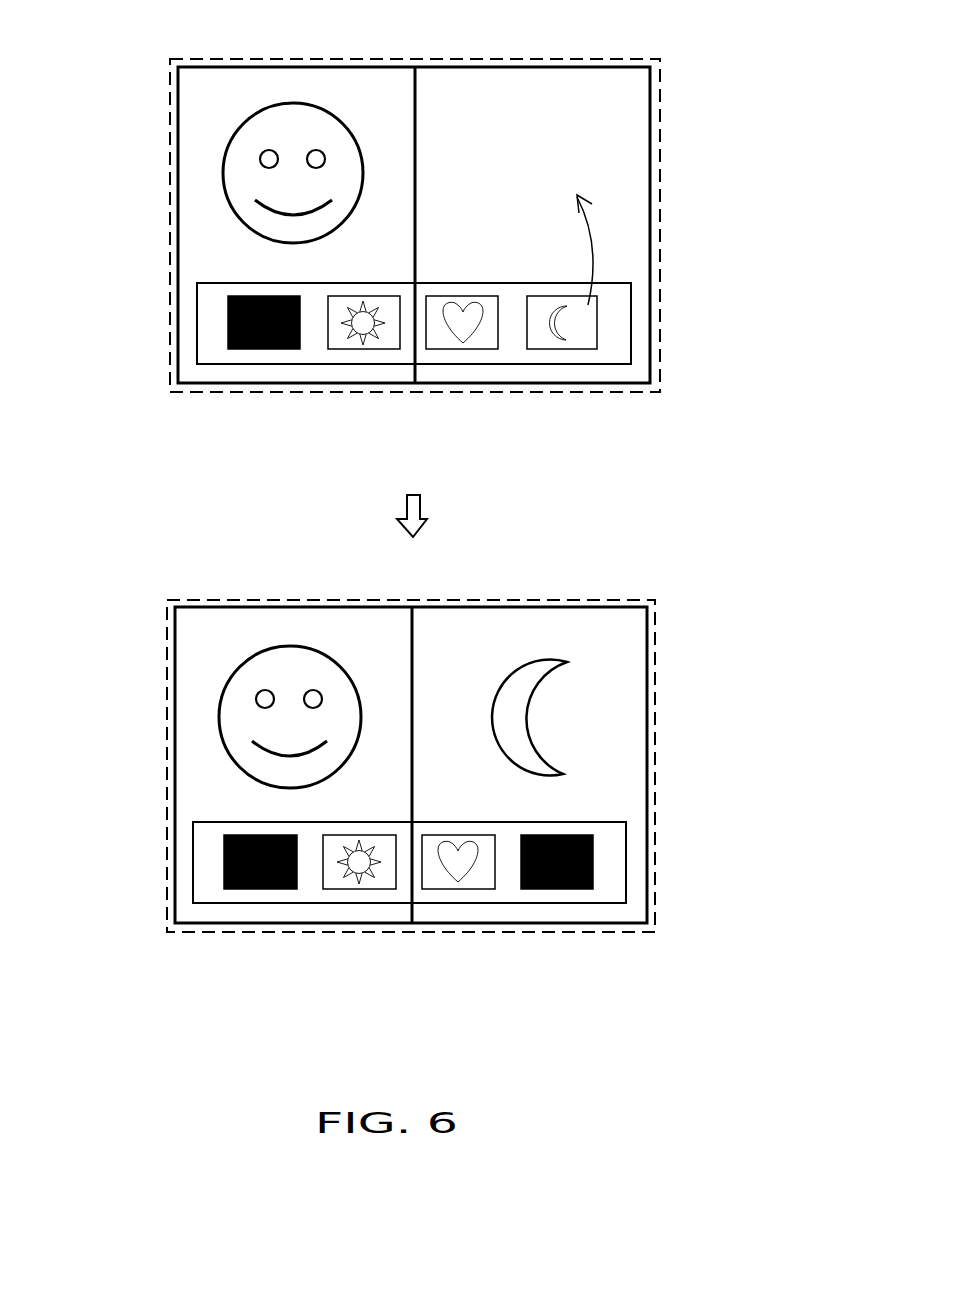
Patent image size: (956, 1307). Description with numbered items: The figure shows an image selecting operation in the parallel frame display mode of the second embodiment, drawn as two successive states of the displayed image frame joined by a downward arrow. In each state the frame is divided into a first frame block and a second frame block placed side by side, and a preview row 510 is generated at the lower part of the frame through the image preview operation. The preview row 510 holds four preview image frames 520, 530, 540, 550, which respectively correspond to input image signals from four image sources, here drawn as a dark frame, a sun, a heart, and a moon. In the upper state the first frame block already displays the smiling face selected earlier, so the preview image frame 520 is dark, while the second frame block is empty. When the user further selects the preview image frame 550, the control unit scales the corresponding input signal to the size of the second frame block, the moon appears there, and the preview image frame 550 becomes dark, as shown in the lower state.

The preview row 510 is at (631, 320).
The preview image frame 520 is at (263, 349).
The preview image frame 530 is at (363, 349).
The preview image frame 540 is at (462, 349).
The preview image frame 550 is at (561, 349).